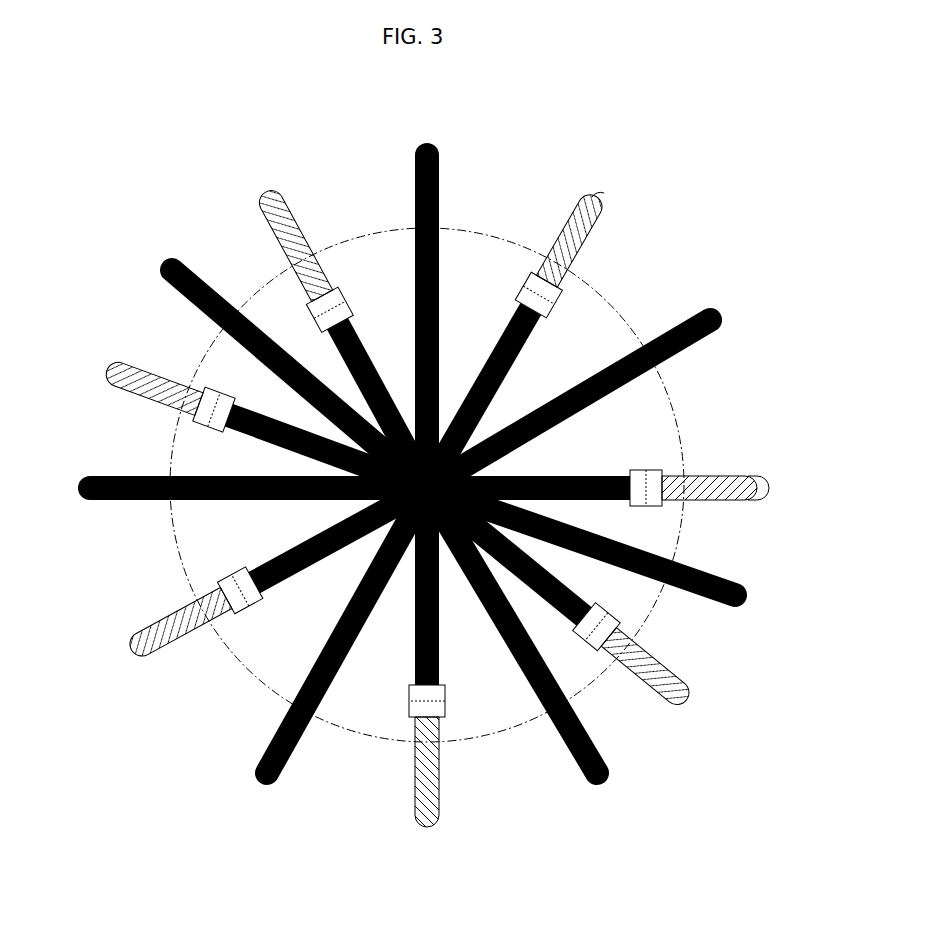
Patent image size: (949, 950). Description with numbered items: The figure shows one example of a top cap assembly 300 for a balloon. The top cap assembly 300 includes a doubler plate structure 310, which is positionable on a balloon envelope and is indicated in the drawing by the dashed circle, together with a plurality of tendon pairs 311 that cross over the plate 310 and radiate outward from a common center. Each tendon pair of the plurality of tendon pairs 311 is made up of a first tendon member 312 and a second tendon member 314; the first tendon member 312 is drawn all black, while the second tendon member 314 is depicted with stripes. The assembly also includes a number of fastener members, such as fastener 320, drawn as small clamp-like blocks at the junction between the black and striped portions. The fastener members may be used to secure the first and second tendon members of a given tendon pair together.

The top cap assembly 300 is at (857, 48).
The doubler plate structure 310 is at (362, 230).
The plurality of tendon pairs 311 is at (757, 473).
The first tendon member 312 is at (505, 332).
The second tendon member 314 is at (564, 243).
The fastener 320 is at (570, 297).